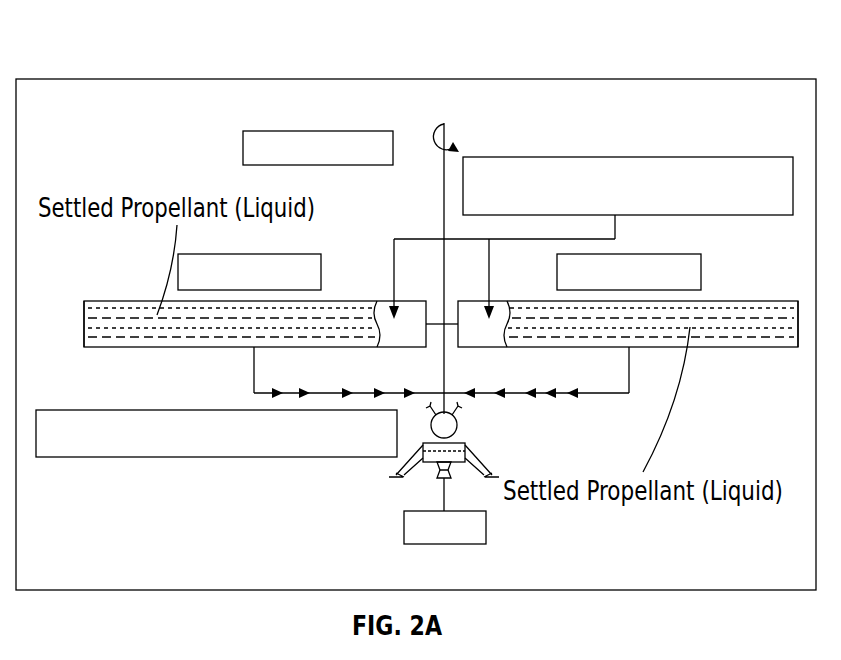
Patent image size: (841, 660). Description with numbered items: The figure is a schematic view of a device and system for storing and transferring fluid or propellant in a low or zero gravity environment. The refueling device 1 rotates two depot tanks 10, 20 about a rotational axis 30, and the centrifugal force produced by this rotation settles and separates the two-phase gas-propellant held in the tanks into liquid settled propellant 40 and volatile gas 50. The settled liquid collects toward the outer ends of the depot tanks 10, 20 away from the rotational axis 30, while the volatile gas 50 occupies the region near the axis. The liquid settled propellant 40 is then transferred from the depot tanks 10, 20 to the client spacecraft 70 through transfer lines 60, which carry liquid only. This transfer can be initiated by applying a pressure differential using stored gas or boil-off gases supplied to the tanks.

The refueling device 1 is at (747, 54).
The depot tank 10 is at (657, 254).
The depot tank 20 is at (238, 254).
The rotational axis 30 is at (432, 125).
The liquid settled propellant 40 is at (147, 300).
The volatile gas 50 is at (745, 157).
The transfer lines 60 is at (605, 393).
The client spacecraft 70 is at (468, 443).